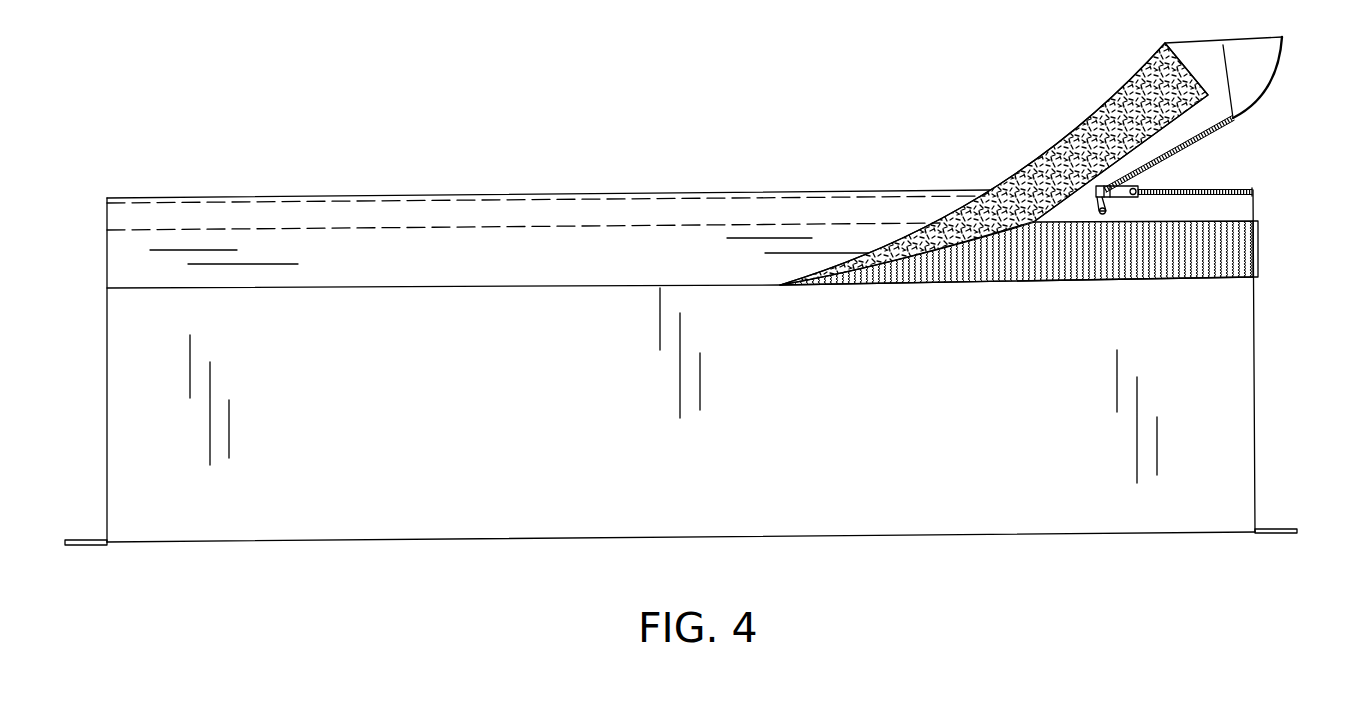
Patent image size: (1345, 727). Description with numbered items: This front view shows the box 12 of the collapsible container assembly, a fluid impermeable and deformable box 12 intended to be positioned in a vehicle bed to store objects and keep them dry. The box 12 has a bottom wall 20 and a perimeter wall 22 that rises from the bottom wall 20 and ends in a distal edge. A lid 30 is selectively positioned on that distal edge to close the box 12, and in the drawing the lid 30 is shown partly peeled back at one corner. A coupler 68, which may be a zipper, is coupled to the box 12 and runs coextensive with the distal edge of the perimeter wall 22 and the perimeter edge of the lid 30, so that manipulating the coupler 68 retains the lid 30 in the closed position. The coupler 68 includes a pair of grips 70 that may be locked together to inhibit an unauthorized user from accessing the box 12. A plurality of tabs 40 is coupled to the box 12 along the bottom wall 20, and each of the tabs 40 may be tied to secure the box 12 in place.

The box 12 is at (1227, 392).
The bottom wall 20 is at (240, 542).
The perimeter wall 22 is at (118, 408).
The lid 30 is at (988, 190).
The tabs 40 is at (68, 545).
The coupler 68 is at (1238, 190).
The grips 70 is at (1105, 213).